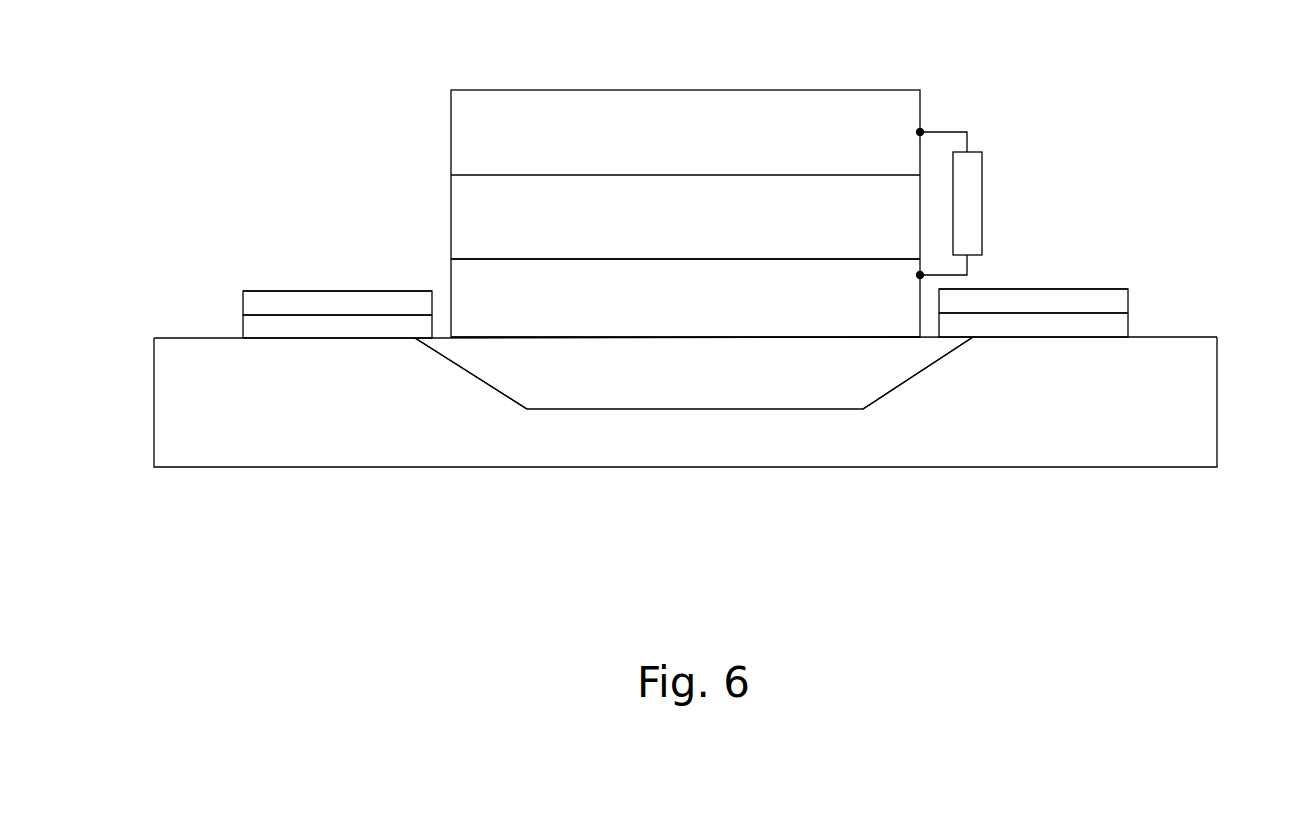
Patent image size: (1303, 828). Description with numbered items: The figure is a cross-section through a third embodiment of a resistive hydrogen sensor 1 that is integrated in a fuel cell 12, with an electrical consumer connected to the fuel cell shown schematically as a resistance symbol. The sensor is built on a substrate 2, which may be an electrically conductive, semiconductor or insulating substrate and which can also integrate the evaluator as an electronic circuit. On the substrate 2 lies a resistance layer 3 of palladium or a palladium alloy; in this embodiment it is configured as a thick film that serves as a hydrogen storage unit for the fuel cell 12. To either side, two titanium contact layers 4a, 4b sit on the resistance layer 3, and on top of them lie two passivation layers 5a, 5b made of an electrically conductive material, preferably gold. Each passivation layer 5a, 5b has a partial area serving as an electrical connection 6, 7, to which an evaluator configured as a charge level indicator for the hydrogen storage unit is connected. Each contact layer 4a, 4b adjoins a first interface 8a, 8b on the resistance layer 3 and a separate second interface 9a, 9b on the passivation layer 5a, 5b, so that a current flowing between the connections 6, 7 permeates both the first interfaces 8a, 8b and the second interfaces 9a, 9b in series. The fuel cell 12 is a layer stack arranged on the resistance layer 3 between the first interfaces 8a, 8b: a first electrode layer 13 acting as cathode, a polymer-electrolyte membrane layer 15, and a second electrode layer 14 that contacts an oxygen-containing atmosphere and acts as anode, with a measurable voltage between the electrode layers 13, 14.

The resistive hydrogen sensor 1 is at (1196, 493).
The substrate 2 is at (1010, 452).
The resistance layer 3 is at (703, 393).
The first electrical contact layer 4a is at (252, 328).
The second electrical contact layer 4b is at (1118, 327).
The first passivation layer 5a is at (283, 305).
The second passivation layer 5b is at (1076, 298).
The first electrical connection 6 is at (301, 284).
The second electrical connection 7 is at (1118, 285).
The first interface 8a is at (433, 345).
The first interface 8b is at (947, 342).
The second interface 9a is at (360, 306).
The second interface 9b is at (1027, 305).
The fuel cell 12 is at (599, 199).
The first electrode layer 13 is at (697, 324).
The second electrode layer 14 is at (710, 166).
The membrane layer 15 is at (707, 240).